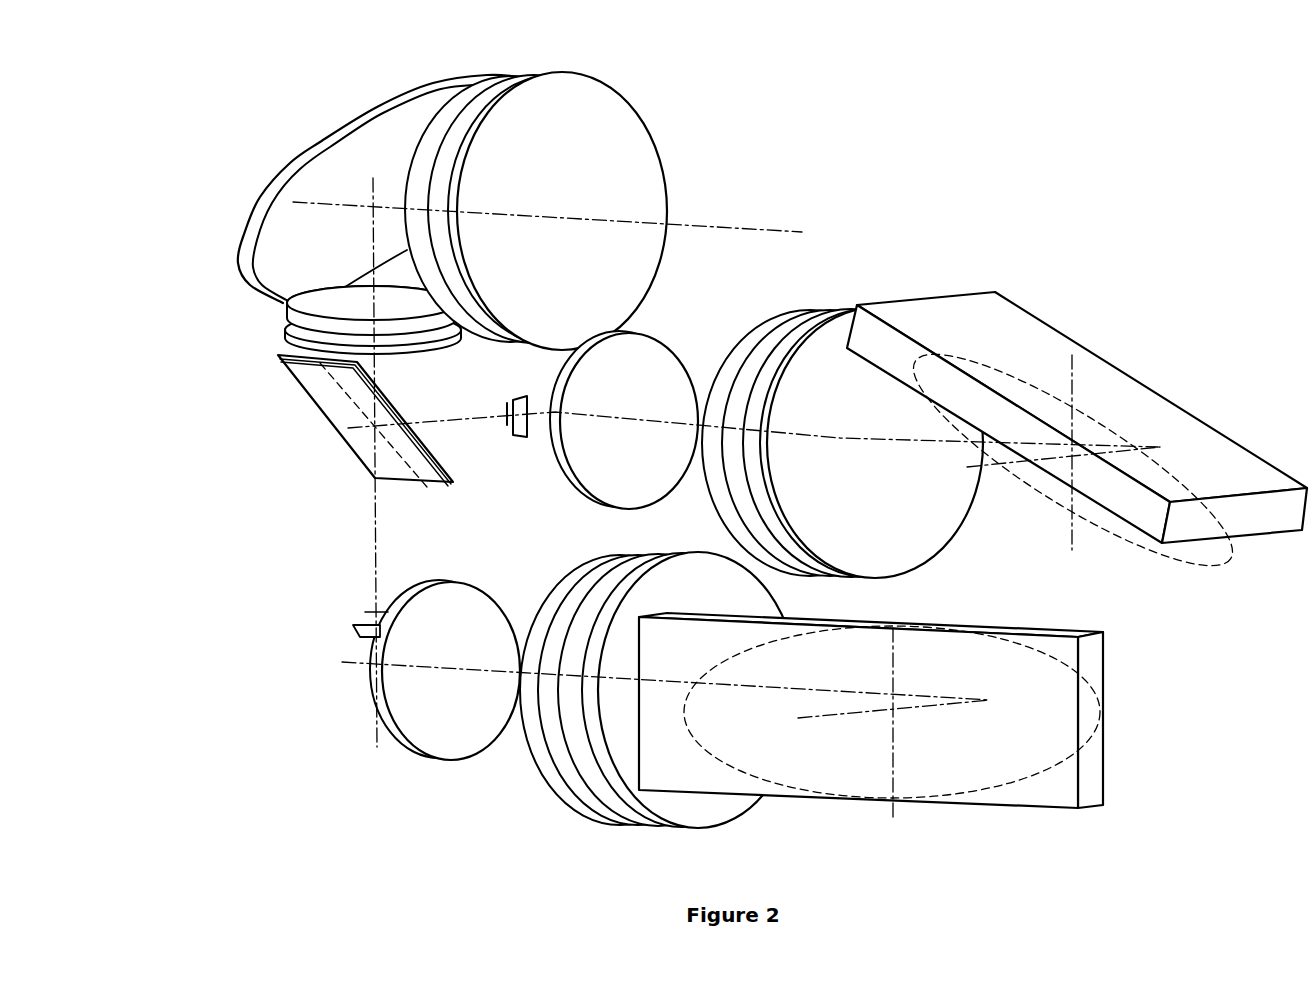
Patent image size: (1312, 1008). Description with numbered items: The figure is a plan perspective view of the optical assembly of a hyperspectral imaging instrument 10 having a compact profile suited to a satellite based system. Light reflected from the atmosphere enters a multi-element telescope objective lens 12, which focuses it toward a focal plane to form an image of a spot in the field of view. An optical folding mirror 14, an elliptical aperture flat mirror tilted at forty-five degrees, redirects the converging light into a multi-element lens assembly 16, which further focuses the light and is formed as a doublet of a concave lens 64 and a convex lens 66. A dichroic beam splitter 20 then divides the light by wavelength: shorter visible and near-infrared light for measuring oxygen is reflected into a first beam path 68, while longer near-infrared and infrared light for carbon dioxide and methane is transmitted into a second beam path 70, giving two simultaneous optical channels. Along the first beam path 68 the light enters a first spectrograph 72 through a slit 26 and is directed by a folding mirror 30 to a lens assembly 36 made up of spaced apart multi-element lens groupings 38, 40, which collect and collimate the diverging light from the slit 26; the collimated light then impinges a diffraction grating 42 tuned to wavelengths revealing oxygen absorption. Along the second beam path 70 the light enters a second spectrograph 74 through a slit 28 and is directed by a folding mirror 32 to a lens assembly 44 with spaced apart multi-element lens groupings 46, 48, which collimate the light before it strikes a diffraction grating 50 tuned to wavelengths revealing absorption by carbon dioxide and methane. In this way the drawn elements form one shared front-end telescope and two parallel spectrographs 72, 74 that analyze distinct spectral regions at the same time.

The hyperspectral imaging instrument 10 is at (970, 100).
The multi-element telescope objective lens 12 is at (661, 153).
The optical folding mirror 14 is at (309, 152).
The multi-element lens assembly 16 is at (310, 329).
The dichroic beam splitter 20 is at (305, 400).
The slit 26 is at (505, 411).
The slit 28 is at (365, 612).
The folding mirror 30 is at (517, 398).
The folding mirror 32 is at (355, 631).
The lens assembly 36 is at (766, 410).
The multi-element lens grouping 38 is at (673, 345).
The multi-element lens grouping 40 is at (842, 432).
The diffraction grating 42 is at (1040, 316).
The lens assembly 44 is at (584, 708).
The multi-element lens grouping 46 is at (469, 763).
The multi-element lens grouping 48 is at (647, 690).
The diffraction grating 50 is at (1110, 680).
The concave lens 64 is at (285, 320).
The convex lens 66 is at (288, 341).
The first beam path 68 is at (465, 422).
The second beam path 70 is at (381, 565).
The first spectrograph 72 is at (928, 398).
The second spectrograph 74 is at (784, 725).